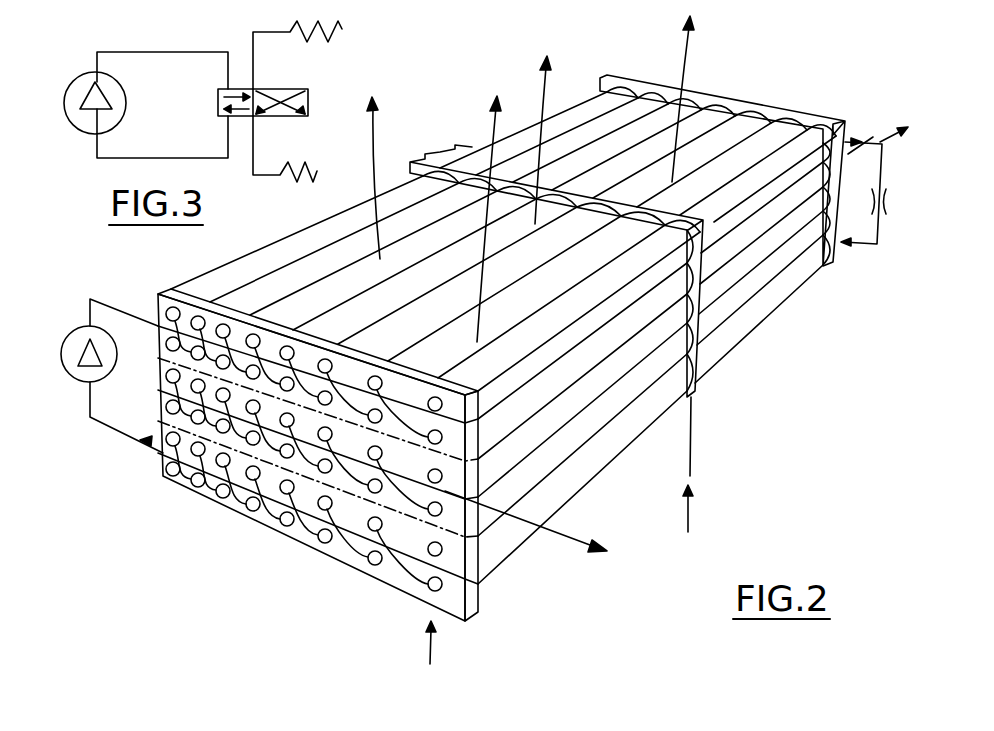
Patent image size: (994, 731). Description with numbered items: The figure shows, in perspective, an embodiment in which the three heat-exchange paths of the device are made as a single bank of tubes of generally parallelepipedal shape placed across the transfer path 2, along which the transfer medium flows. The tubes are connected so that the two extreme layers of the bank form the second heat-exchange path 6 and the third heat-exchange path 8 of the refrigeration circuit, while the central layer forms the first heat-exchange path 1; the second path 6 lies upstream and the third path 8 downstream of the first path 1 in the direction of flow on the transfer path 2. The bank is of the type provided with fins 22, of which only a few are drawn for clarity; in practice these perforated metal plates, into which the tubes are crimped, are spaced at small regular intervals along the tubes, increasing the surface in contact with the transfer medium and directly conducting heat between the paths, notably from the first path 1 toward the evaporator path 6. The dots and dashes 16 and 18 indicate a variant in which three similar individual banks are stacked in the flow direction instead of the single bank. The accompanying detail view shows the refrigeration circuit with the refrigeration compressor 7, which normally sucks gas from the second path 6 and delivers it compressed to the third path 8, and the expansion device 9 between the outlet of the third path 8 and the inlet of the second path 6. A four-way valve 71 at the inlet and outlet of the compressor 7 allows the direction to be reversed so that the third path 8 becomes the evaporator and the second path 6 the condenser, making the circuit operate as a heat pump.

In FIG. 2, the first heat-exchange path 1 is at (477, 520).
In FIG. 2, the transfer path 2 is at (692, 468).
In FIG. 3, the second heat-exchange path 6 is at (288, 180).
In FIG. 2, the second heat-exchange path 6 is at (478, 603).
In FIG. 3, the refrigeration compressor 7 is at (125, 113).
In FIG. 2, the refrigeration compressor 7 is at (116, 362).
In FIG. 3, the third heat-exchange path 8 is at (305, 33).
In FIG. 2, the third heat-exchange path 8 is at (478, 432).
In FIG. 2, the expansion device 9 is at (872, 215).
In FIG. 2, the dots and dashes 16 is at (263, 470).
In FIG. 2, the dots and dashes 18 is at (352, 430).
In FIG. 2, the fins 22 is at (710, 350).
In FIG. 3, the four-way valve 71 is at (314, 91).